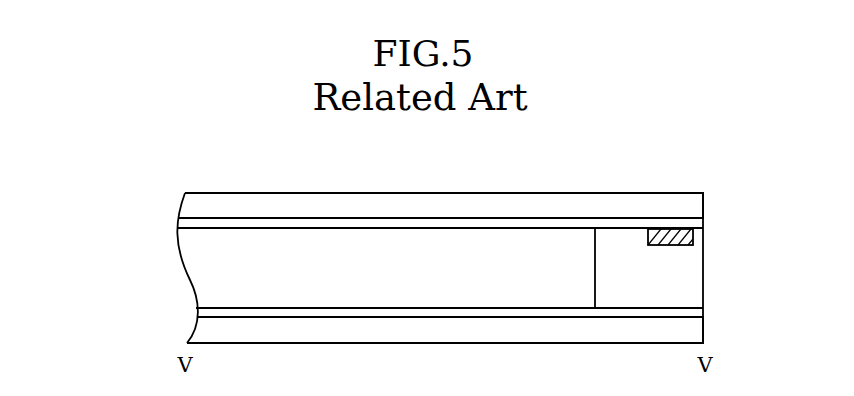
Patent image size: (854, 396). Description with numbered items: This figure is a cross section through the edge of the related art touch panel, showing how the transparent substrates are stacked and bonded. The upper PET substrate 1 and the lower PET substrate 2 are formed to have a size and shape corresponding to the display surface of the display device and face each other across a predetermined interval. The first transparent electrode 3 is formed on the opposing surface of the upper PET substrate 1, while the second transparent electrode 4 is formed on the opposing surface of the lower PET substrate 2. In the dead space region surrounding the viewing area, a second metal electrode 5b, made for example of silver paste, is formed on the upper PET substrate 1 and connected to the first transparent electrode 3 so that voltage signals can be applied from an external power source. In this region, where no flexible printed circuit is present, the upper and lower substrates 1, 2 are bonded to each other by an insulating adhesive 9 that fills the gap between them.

The upper PET substrate 1 is at (183, 202).
The lower PET substrate 2 is at (193, 328).
The first transparent electrode 3 is at (178, 224).
The second transparent electrode 4 is at (260, 312).
The second metal electrode 5b is at (693, 237).
The insulating adhesive 9 is at (687, 272).